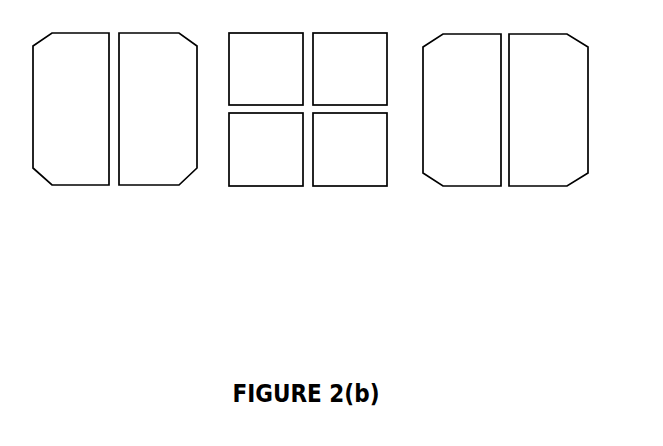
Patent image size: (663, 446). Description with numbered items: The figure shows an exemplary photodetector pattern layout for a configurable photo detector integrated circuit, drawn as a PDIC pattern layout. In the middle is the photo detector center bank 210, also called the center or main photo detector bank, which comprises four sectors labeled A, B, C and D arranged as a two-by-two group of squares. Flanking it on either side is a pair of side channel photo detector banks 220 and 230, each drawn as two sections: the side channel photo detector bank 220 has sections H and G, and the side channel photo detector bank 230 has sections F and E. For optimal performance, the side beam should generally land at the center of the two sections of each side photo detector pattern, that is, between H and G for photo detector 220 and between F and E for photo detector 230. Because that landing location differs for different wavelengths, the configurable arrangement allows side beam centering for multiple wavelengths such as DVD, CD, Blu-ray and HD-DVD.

The photo detector center bank 210 is at (310, 234).
The side channel photo detector bank 220 is at (82, 234).
The side channel photo detector bank 230 is at (501, 233).